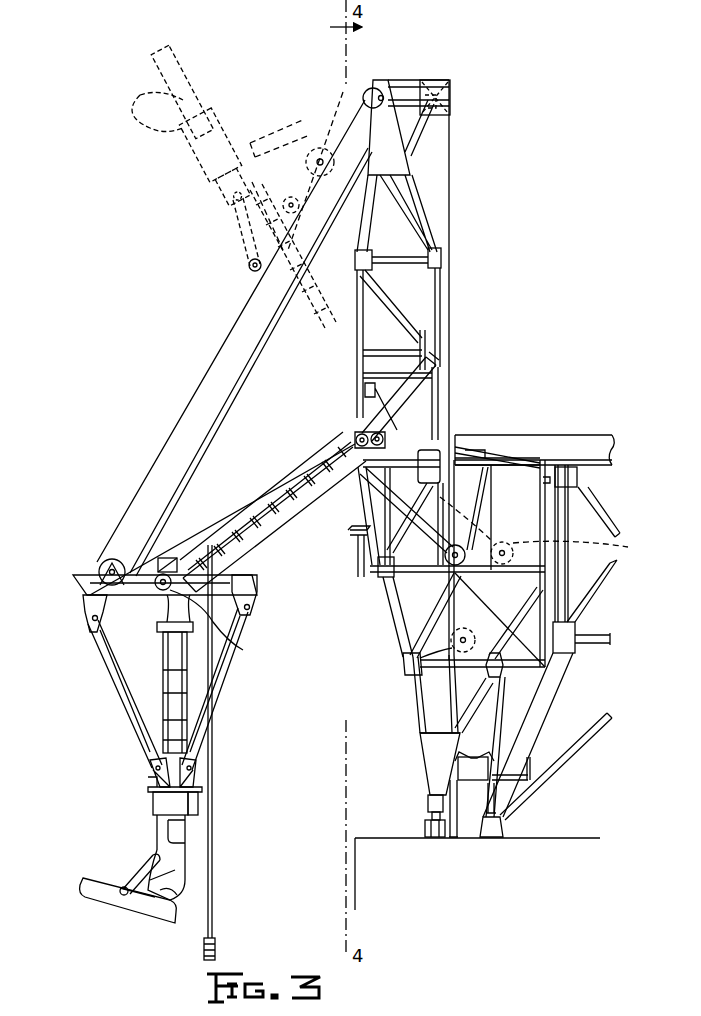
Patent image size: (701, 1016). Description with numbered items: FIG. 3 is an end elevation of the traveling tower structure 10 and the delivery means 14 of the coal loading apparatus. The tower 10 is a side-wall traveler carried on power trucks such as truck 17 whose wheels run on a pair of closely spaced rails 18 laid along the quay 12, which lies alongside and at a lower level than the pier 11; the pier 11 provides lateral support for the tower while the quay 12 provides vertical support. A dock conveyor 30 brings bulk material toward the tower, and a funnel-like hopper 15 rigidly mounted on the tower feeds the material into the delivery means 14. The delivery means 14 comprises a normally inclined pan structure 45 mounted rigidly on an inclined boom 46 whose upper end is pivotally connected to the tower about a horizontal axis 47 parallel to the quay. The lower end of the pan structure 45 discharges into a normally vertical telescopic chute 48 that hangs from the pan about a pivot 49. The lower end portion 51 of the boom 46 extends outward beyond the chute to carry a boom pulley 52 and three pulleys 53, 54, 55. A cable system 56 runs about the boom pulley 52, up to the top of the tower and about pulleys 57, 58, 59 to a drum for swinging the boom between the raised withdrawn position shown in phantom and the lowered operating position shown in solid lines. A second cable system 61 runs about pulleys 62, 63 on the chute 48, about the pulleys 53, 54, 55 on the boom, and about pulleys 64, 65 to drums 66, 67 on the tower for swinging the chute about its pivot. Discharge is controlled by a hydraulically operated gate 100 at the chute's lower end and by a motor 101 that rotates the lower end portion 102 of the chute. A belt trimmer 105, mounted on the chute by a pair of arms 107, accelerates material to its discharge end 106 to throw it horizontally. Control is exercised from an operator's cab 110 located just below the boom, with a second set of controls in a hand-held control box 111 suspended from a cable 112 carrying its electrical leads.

The traveling tower structure 10 is at (436, 210).
The pier 11 is at (594, 430).
The quay 12 is at (362, 832).
The delivery means 14 is at (150, 686).
The hopper 15 is at (390, 352).
The power truck 17 is at (428, 810).
The rails 18 is at (441, 838).
The dock conveyor 30 is at (480, 752).
The pan structure 45 is at (214, 548).
The boom 46 is at (303, 320).
The horizontal axis 47 is at (357, 452).
The telescopic chute 48 is at (197, 153).
The pivot 49 is at (216, 624).
The lower end portion of the boom 51 is at (75, 577).
The boom pulley 52 is at (112, 558).
The pulley 53 is at (92, 630).
The pulley 54 is at (254, 607).
The pulley 55 is at (167, 556).
The cable system 56 is at (190, 386).
The pulley 57 is at (383, 86).
The pulley 58 is at (452, 82).
The pulley 59 is at (420, 660).
The cable system 61 is at (125, 725).
The pulley 62 is at (150, 764).
The pulley 63 is at (197, 763).
The pulley 64 is at (356, 432).
The pulley 65 is at (383, 427).
The drum 66 is at (446, 556).
The drum 67 is at (544, 530).
The gate 100 is at (172, 896).
The motor 101 is at (150, 785).
The lower end portion of the telescopic chute 102 is at (186, 850).
The trimmer 105 is at (140, 906).
The discharge end 106 is at (80, 890).
The arms 107 is at (136, 870).
The operator's cab 110 is at (362, 578).
The control box 111 is at (215, 946).
The cable 112 is at (213, 920).